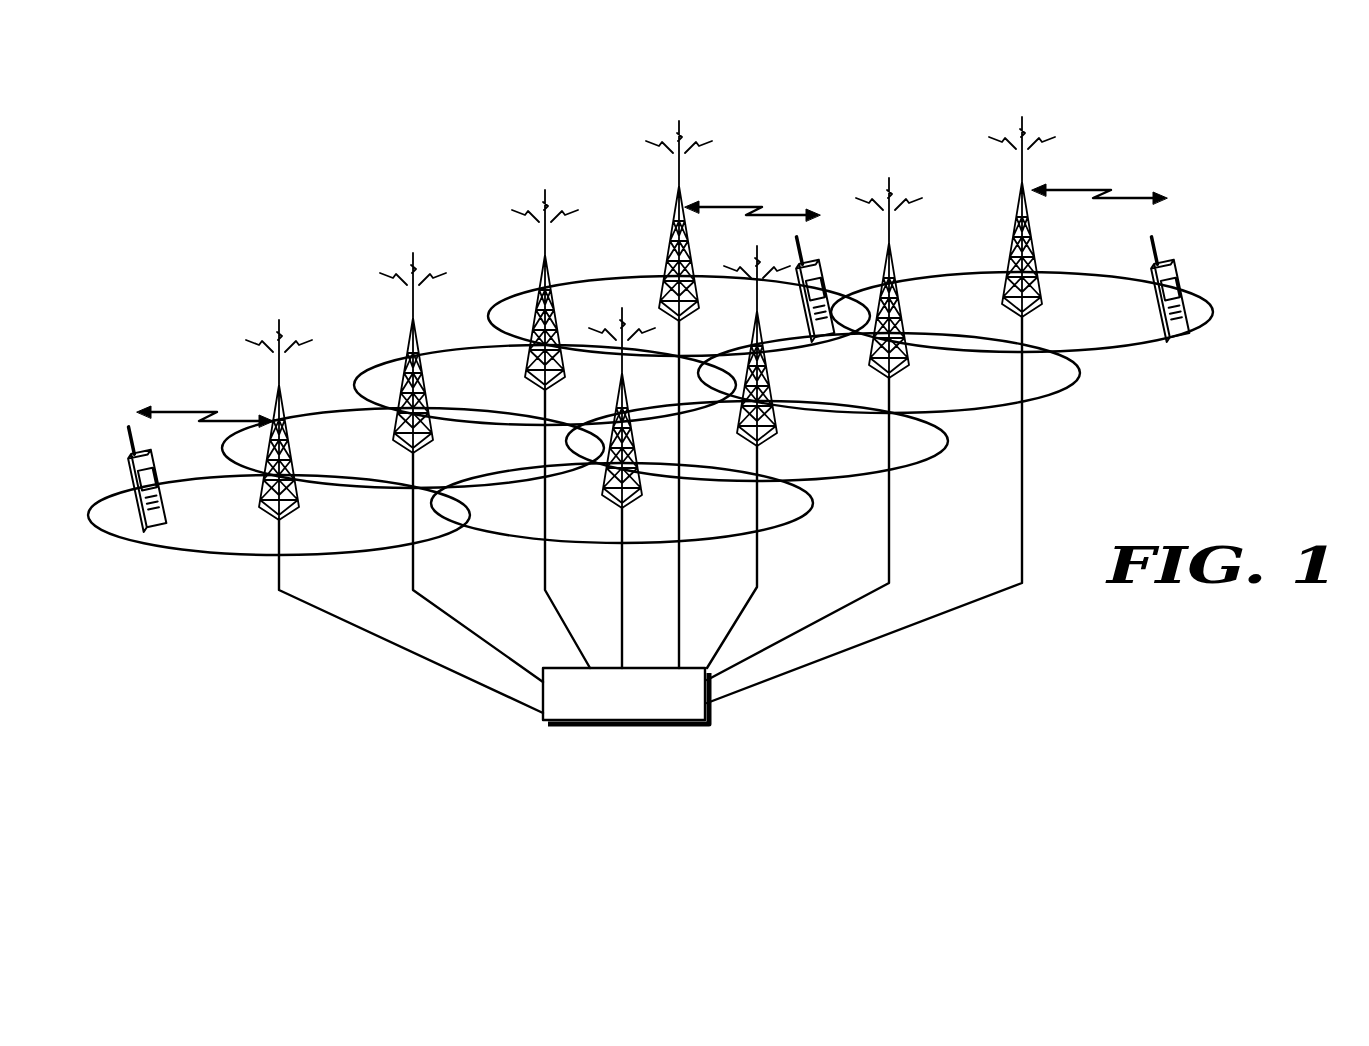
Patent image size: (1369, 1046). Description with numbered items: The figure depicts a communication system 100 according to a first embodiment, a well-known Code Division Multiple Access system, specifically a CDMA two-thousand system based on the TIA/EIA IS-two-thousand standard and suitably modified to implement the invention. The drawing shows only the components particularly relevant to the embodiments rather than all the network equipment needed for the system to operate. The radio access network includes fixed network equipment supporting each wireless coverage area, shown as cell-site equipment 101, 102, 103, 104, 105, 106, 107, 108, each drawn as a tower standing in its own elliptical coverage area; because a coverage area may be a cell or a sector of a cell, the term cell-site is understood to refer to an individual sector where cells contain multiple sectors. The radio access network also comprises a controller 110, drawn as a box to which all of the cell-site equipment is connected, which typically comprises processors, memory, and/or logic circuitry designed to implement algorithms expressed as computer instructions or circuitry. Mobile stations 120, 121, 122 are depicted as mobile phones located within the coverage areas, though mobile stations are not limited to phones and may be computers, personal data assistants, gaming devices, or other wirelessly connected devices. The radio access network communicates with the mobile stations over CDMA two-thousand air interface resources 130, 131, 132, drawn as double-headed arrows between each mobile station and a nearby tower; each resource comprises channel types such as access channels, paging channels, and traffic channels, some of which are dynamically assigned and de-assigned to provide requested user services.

The communication system 100 is at (405, 161).
The cell-site equipment 101 is at (262, 493).
The cell-site equipment 102 is at (396, 419).
The cell-site equipment 103 is at (528, 358).
The cell-site equipment 104 is at (697, 289).
The cell-site equipment 105 is at (605, 478).
The cell-site equipment 106 is at (740, 409).
The cell-site equipment 107 is at (873, 345).
The cell-site equipment 108 is at (1006, 278).
The controller 110 is at (571, 727).
The mobile station 120 is at (135, 518).
The mobile station 121 is at (808, 261).
The mobile station 122 is at (1161, 262).
The air interface resource 130 is at (199, 411).
The air interface resource 131 is at (741, 206).
The air interface resource 132 is at (1090, 190).